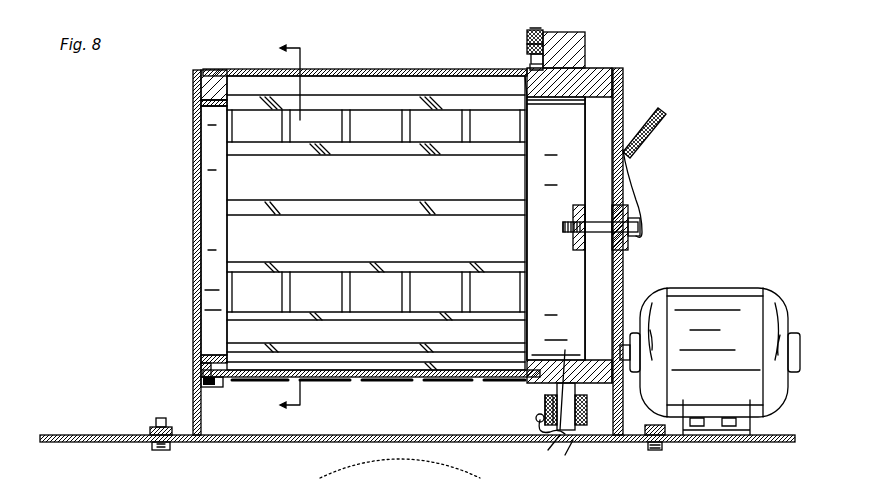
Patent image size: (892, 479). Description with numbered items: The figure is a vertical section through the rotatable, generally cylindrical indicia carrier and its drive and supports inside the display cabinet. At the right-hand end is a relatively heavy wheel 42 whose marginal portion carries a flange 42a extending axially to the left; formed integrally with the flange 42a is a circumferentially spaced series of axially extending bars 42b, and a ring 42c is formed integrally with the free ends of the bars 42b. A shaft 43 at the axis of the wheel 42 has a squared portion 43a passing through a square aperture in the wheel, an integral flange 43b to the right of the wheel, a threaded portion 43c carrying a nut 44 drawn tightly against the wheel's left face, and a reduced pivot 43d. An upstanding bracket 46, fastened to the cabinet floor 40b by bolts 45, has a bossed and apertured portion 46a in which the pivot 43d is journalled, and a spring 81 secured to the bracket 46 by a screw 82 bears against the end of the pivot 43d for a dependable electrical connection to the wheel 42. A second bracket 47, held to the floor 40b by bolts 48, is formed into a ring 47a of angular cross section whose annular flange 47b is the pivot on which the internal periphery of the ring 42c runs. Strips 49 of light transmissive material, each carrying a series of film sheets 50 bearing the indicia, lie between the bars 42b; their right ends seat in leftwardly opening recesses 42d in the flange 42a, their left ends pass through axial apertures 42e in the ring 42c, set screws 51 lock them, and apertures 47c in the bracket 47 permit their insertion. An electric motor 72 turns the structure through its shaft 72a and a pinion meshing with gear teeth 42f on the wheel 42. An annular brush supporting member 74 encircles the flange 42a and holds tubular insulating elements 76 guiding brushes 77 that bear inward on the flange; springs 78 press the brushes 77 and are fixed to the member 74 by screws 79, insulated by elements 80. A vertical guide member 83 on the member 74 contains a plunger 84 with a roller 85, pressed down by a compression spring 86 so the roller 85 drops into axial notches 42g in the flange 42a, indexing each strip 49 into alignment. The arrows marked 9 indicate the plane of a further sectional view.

The section line 9 is at (281, 227).
The floor 40b is at (78, 436).
The wheel 42 is at (600, 78).
The flange 42a is at (556, 100).
The bars 42b is at (372, 69).
The ring 42c is at (213, 80).
The recesses 42d is at (528, 372).
The apertures 42e is at (195, 362).
The gear teeth 42f is at (612, 75).
The notches 42g is at (527, 80).
The shaft 43 is at (642, 238).
The squared portion 43a is at (597, 232).
The flange 43b is at (610, 240).
The threaded portion 43c is at (563, 224).
The pivot 43d is at (640, 226).
The nut 44 is at (578, 206).
The bolts 45 is at (656, 450).
The bracket 46 is at (623, 90).
The bossed and apertured portion 46a is at (626, 250).
The second bracket 47 is at (193, 80).
The ring 47a is at (200, 103).
The annular flange 47b is at (214, 105).
The apertures 47c is at (195, 378).
The bolts 48 is at (161, 420).
The strips 49 is at (465, 135).
The sheets 50 is at (425, 380).
The set screws 51 is at (212, 388).
The electric motor 72 is at (722, 300).
The motor shaft 72a is at (630, 352).
The brush supporting member 74 is at (568, 38).
The tubular insulating elements 76 is at (565, 455).
The electrical brush 77 is at (565, 350).
The springs 78 is at (548, 445).
The screws 79 is at (536, 418).
The insulating elements 80 is at (545, 408).
The spring 81 is at (640, 200).
The screw 82 is at (635, 155).
The guide member 83 is at (527, 46).
The plunger 84 is at (531, 58).
The roller 85 is at (530, 68).
The compression spring 86 is at (530, 34).